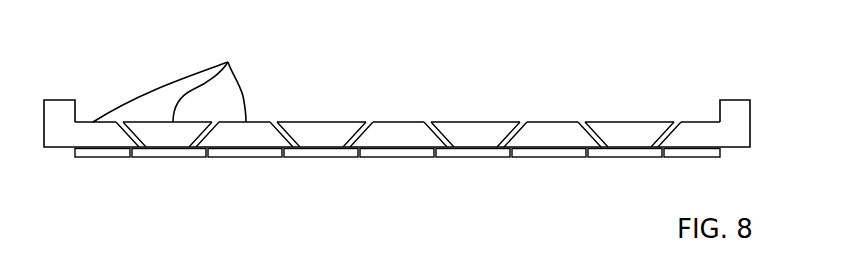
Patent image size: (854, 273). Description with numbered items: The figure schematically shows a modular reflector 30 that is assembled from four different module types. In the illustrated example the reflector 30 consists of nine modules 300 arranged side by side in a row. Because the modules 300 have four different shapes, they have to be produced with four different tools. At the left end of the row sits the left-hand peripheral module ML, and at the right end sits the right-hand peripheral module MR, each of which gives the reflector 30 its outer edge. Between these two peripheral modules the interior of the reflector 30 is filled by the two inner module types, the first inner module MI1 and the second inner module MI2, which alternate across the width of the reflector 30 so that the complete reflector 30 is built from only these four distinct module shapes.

The modular reflector 30 is at (501, 92).
The modules 300 is at (170, 79).
The left-hand peripheral module ML is at (102, 173).
The first inner module MI1 is at (397, 173).
The second inner module MI2 is at (397, 173).
The right-hand peripheral module MR is at (692, 173).